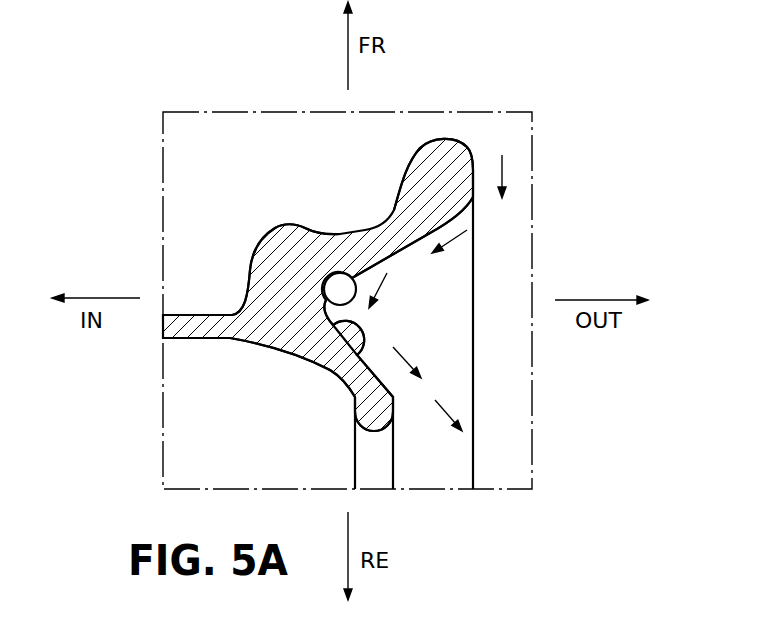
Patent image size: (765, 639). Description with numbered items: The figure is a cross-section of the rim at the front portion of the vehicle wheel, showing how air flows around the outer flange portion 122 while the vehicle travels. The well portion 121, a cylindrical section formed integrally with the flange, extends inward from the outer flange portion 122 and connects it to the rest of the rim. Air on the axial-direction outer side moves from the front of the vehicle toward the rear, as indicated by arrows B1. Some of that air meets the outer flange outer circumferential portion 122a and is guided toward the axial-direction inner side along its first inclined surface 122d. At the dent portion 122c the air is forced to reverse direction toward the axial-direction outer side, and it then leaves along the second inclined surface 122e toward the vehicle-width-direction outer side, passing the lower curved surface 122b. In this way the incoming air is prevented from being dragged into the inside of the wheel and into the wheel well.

The well portion 121 is at (188, 306).
The outer flange portion 122 is at (395, 155).
The outer flange outer circumferential portion 122a is at (447, 150).
The lower curved surface 122b is at (312, 355).
The dent portion 122c is at (350, 280).
The first inclined surface 122d is at (415, 260).
The second inclined surface 122e is at (340, 337).
The arrows B1 is at (454, 293).